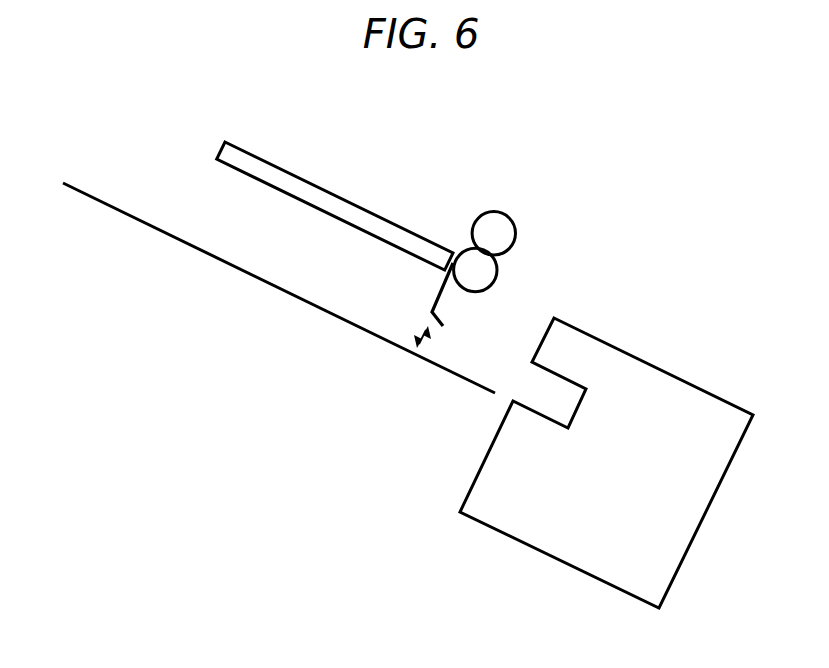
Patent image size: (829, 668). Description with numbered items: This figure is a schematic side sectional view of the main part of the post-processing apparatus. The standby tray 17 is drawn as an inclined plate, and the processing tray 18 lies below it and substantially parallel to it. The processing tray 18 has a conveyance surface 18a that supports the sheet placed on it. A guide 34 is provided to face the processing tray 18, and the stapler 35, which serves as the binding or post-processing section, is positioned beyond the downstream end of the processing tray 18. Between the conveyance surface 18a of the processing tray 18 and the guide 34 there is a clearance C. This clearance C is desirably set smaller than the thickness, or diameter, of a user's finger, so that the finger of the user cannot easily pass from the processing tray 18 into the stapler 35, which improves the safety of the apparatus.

The standby tray 17 is at (332, 192).
The processing tray 18 is at (85, 190).
The conveyance surface 18a is at (147, 219).
The guide 34 is at (436, 316).
The stapler 35 is at (658, 367).
The clearance C is at (429, 340).